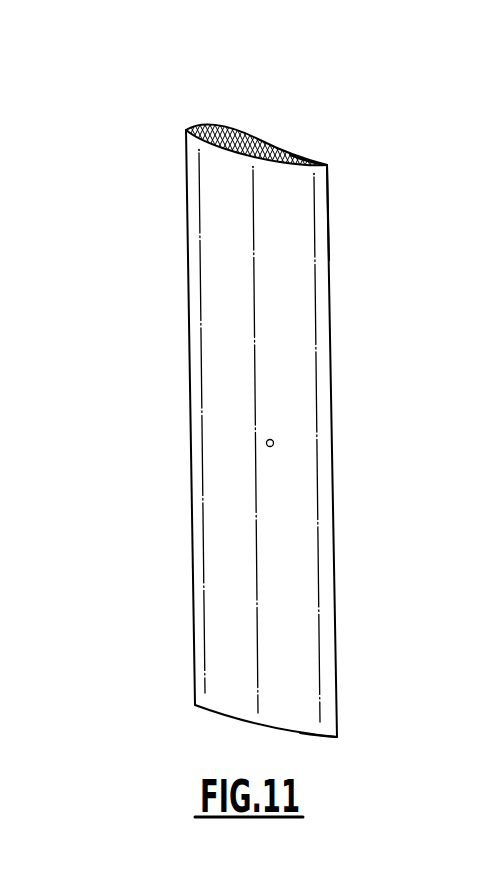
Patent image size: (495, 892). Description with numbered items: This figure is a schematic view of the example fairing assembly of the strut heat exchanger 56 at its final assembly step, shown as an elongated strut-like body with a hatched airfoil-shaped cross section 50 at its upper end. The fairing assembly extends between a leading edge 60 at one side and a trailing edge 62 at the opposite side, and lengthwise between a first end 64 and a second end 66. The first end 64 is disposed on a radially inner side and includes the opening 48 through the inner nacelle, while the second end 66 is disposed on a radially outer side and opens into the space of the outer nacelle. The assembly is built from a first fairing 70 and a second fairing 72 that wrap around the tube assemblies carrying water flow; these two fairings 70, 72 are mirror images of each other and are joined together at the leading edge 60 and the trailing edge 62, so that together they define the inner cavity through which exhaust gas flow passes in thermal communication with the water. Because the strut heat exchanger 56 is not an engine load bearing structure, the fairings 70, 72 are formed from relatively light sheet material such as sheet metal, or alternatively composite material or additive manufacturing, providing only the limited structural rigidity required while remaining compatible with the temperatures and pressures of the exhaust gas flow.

The opening 48 is at (219, 737).
The airfoil cross-section 50 is at (255, 120).
The strut heat exchanger 56 is at (295, 427).
The leading edge 60 is at (178, 116).
The trailing edge 62 is at (345, 173).
The first end 64 is at (325, 151).
The second end 66 is at (328, 748).
The first fairing 70 is at (272, 447).
The second fairing 72 is at (343, 352).